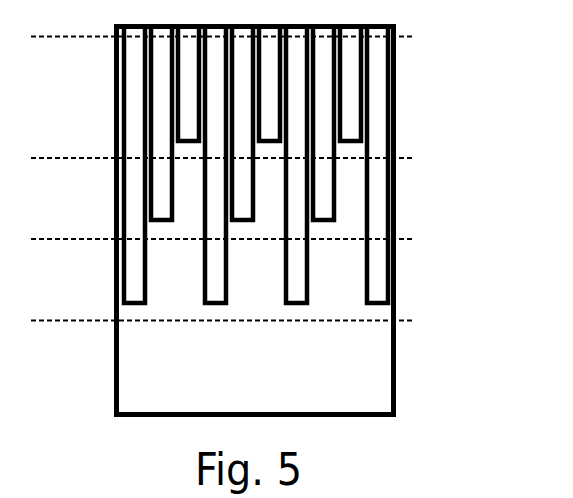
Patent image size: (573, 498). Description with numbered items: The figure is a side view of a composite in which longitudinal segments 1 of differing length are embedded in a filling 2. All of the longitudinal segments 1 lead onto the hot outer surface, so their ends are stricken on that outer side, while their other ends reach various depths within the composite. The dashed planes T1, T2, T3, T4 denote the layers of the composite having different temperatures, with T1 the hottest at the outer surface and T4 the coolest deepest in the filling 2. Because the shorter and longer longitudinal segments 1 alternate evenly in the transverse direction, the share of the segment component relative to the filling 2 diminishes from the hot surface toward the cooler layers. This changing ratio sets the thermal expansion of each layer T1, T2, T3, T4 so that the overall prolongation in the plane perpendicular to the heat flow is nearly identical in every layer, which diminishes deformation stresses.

The longitudinal segment 1 is at (345, 98).
The filling 2 is at (348, 175).
The layer plane with temperature T1 is at (221, 18).
The layer plane with temperature T2 is at (221, 139).
The layer plane with temperature T3 is at (221, 219).
The layer plane with temperature T4 is at (221, 300).